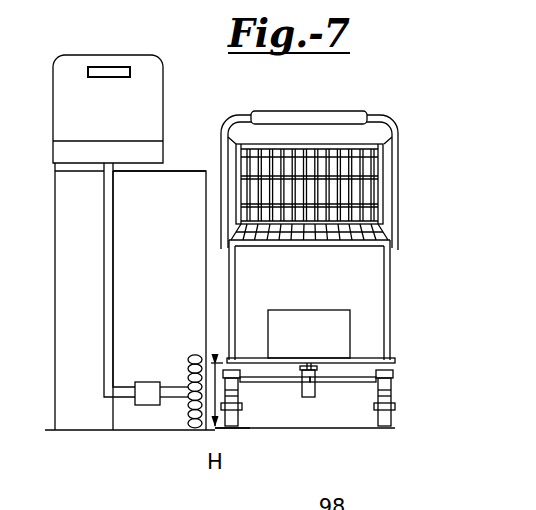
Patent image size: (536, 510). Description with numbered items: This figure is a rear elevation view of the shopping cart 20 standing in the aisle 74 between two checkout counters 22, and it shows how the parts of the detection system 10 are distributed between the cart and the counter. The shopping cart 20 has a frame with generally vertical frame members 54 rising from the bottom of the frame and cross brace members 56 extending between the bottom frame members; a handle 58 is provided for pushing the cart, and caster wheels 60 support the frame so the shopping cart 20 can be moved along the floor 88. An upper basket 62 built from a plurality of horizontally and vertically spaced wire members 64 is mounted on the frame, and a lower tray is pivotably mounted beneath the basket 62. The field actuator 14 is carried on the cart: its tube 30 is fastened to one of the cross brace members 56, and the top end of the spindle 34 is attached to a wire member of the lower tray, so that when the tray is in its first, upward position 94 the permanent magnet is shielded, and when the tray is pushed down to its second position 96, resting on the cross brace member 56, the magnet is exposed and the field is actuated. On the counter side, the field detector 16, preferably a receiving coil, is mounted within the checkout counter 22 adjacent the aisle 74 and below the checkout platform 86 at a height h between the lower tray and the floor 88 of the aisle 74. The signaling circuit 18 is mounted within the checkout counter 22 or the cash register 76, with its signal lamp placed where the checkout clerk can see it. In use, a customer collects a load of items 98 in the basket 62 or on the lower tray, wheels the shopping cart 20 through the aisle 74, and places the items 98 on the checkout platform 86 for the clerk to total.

The detection system 10 is at (246, 438).
The field actuator 14 is at (303, 365).
The field detector 16 is at (197, 355).
The signaling circuit 18 is at (146, 378).
The shopping cart 20 is at (236, 108).
The checkout counter 22 is at (80, 437).
The tube 30 is at (302, 388).
The spindle 34 is at (316, 372).
The vertical frame members 54 is at (393, 258).
The cross brace members 56 is at (248, 383).
The handle 58 is at (384, 113).
The caster wheels 60 is at (238, 424).
The upper basket 62 is at (348, 138).
The wire members 64 is at (283, 164).
The aisle 74 is at (355, 412).
The cash register 76 is at (100, 54).
The checkout platform 86 is at (196, 168).
The floor 88 is at (158, 432).
The first, upward position 94 is at (373, 355).
The second position 96 is at (357, 373).
The items 98 is at (277, 310).